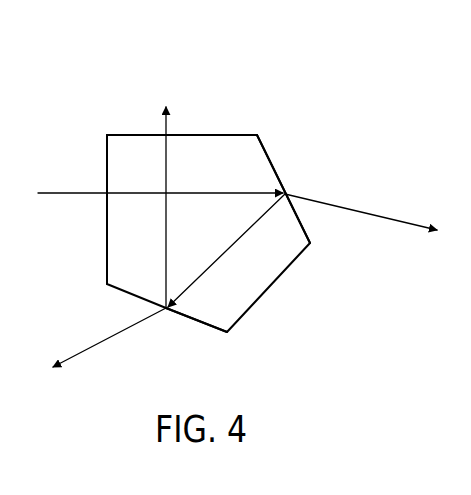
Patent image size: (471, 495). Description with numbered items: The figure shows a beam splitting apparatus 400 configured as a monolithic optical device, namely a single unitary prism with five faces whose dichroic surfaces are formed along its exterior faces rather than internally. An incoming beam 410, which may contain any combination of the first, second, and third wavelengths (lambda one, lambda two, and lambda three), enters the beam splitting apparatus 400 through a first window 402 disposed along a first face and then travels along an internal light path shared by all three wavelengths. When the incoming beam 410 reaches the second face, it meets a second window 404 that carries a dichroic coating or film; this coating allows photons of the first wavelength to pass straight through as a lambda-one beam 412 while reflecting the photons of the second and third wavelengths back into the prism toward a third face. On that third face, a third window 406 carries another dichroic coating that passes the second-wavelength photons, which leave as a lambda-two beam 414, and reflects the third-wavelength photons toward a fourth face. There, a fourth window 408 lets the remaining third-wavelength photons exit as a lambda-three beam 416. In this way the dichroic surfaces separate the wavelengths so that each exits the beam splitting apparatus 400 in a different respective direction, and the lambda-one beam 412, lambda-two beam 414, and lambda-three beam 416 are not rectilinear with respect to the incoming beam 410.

The beam splitting apparatus 400 is at (286, 301).
The first window 402 is at (106, 232).
The second window 404 is at (270, 160).
The third window 406 is at (198, 323).
The fourth window 408 is at (215, 134).
The incoming beam 410 is at (72, 192).
The λ1 beam 412 is at (358, 212).
The λ2 beam 414 is at (92, 345).
The λ3 beam 416 is at (164, 134).